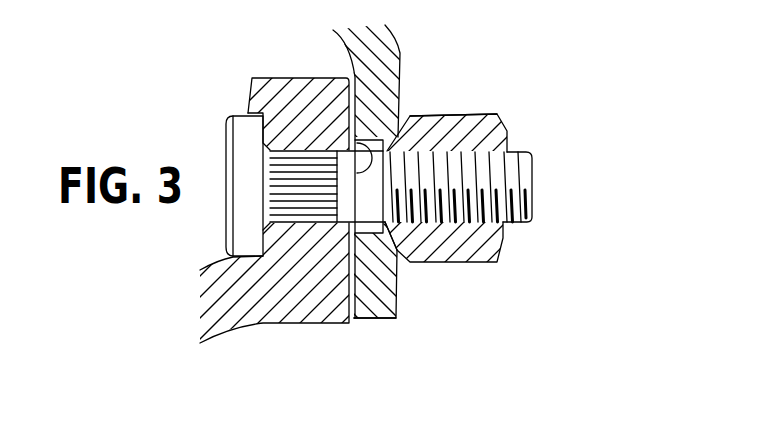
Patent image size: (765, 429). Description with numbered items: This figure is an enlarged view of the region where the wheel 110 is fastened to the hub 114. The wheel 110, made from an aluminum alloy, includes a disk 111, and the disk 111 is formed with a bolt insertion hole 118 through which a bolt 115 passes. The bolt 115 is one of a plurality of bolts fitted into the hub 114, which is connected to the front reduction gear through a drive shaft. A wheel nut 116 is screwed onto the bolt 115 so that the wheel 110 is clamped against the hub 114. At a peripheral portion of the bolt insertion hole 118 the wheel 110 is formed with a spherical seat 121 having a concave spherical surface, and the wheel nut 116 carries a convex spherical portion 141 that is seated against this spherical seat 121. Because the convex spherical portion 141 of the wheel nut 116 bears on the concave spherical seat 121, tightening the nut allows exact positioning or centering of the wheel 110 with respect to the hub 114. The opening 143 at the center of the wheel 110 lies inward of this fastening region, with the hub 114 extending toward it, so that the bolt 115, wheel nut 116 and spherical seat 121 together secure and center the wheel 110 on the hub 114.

The wheel 110 is at (405, 62).
The disk 111 is at (397, 307).
The hub 114 is at (285, 323).
The bolt 115 is at (534, 190).
The wheel nut 116 is at (503, 240).
The bolt insertion hole 118 is at (355, 162).
The spherical seat 121 is at (450, 115).
The convex spherical portion 141 is at (397, 268).
The opening 143 is at (367, 318).